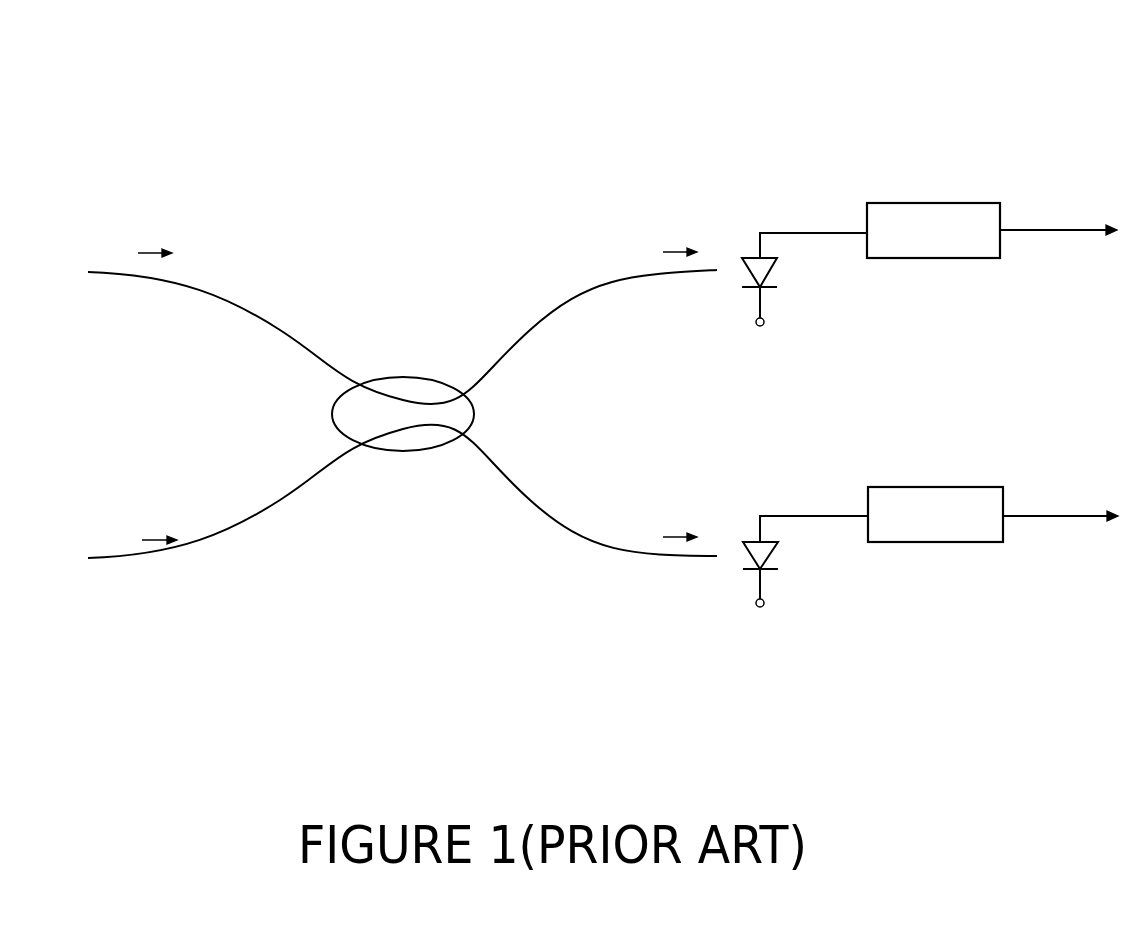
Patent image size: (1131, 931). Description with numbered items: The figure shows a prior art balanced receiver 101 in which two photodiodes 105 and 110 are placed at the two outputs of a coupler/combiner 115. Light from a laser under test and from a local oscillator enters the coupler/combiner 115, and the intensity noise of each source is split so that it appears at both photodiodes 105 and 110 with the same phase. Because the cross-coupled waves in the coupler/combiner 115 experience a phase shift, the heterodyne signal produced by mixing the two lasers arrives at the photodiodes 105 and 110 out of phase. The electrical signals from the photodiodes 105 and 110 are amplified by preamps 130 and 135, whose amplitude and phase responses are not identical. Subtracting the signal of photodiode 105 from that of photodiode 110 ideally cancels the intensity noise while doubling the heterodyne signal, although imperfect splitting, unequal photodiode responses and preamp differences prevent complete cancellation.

The balanced receiver 101 is at (673, 138).
The coupler/combiner 115 is at (408, 387).
The photodiode 105 is at (772, 268).
The photodiode 110 is at (772, 552).
The preamp 130 is at (935, 213).
The preamp 135 is at (935, 497).